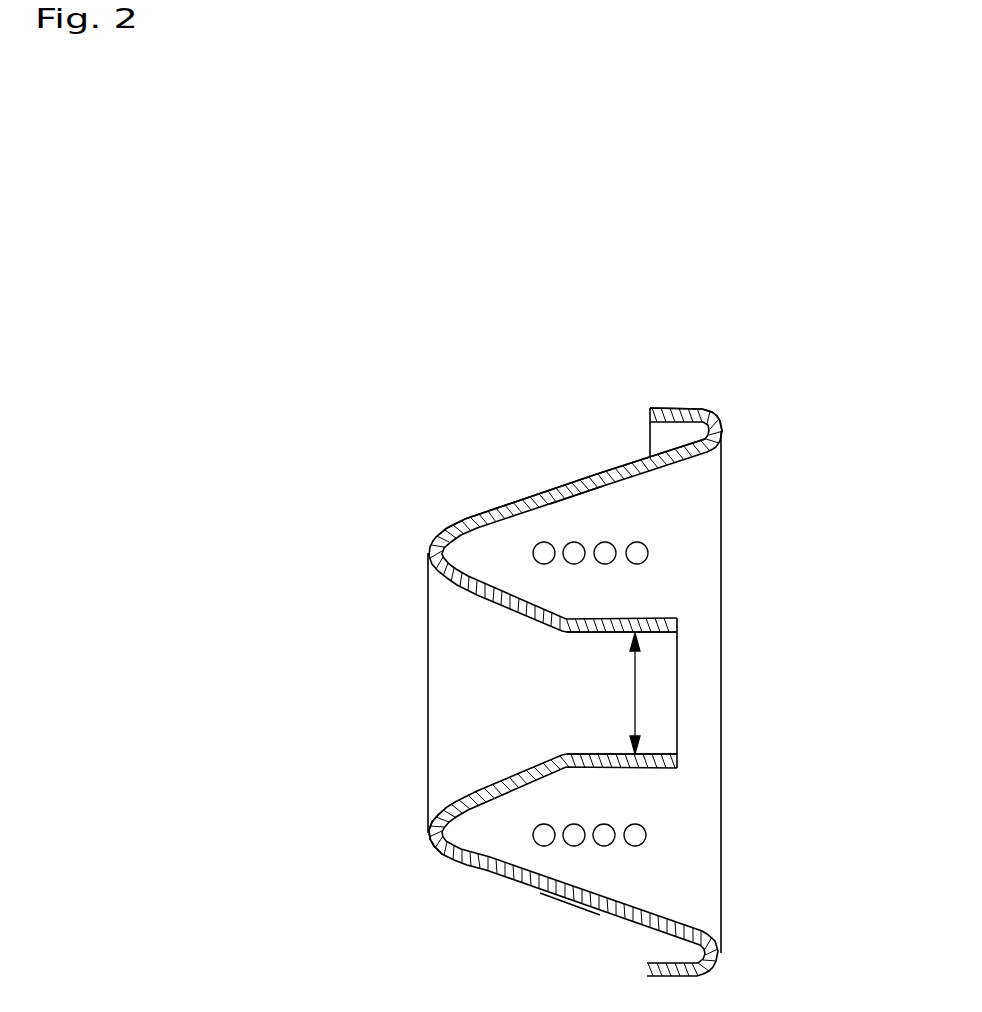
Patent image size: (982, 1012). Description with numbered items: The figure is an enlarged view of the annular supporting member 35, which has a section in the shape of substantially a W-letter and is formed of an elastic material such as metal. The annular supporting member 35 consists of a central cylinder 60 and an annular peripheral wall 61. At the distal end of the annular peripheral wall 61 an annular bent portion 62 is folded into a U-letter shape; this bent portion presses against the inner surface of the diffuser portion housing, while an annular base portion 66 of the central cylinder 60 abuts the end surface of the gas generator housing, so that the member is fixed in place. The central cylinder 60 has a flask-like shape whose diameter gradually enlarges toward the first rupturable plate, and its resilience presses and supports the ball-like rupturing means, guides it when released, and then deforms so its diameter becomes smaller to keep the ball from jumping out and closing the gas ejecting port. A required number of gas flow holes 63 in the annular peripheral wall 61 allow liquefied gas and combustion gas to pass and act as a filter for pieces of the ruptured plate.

The annular supporting member 35 is at (738, 421).
The central cylinder 60 is at (643, 618).
The annular peripheral wall 61 is at (485, 507).
The annular bent portion 62 is at (673, 406).
The gas flow holes 63 is at (573, 478).
The annular base portion 66 is at (428, 838).